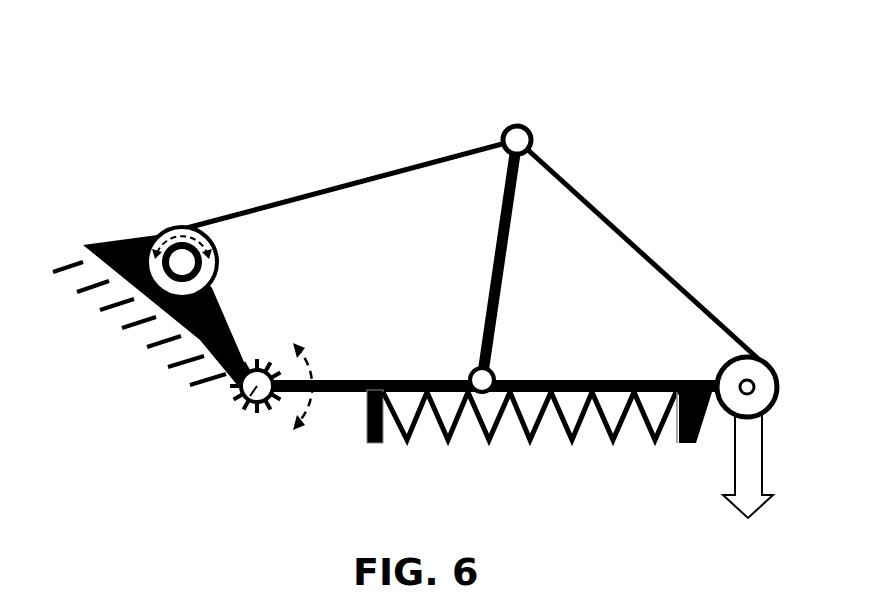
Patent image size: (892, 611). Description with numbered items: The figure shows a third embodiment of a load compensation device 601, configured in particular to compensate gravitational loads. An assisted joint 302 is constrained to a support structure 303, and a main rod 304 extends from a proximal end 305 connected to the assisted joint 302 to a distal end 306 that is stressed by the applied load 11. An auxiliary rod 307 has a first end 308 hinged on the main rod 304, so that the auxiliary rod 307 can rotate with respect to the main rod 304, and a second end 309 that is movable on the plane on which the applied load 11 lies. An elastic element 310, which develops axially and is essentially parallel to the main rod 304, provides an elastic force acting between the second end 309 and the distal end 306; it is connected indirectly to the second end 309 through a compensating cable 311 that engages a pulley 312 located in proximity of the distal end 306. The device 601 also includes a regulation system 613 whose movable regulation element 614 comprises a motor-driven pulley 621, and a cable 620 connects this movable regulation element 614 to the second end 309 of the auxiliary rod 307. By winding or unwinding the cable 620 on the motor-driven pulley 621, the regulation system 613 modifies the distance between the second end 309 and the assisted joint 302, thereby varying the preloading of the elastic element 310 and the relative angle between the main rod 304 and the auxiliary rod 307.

The load 11 is at (762, 470).
The assisted joint 302 is at (247, 410).
The support structure 303 is at (174, 381).
The main rod 304 is at (620, 380).
The proximal end 305 is at (296, 347).
The distal end 306 is at (728, 415).
The auxiliary rod 307 is at (503, 282).
The first end 308 is at (485, 368).
The second end 309 is at (522, 175).
The elastic element 310 is at (553, 447).
The compensating cable 311 is at (708, 307).
The pulley 312 is at (762, 368).
The load compensation device 601 is at (657, 105).
The regulation system 613 is at (504, 209).
The movable regulation element 614 is at (184, 214).
The cable 620 is at (408, 168).
The motor-driven pulley 621 is at (202, 273).